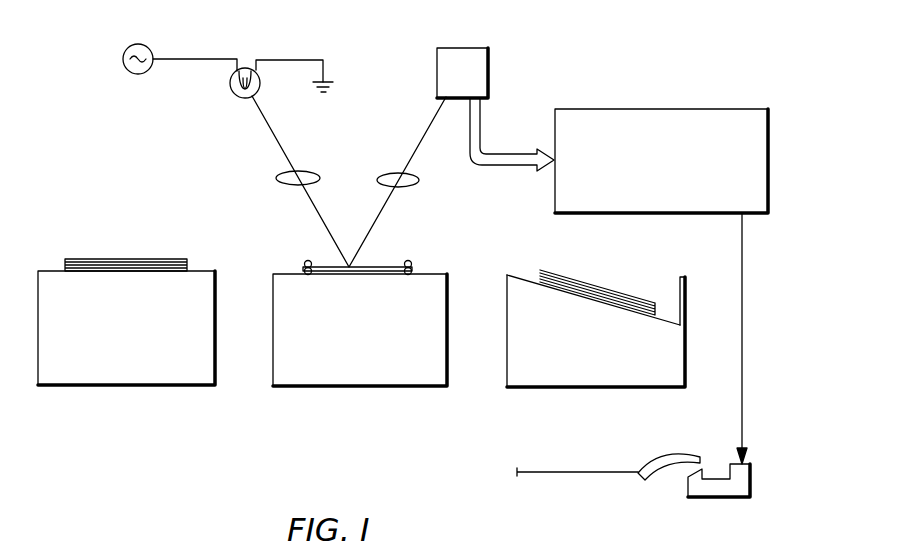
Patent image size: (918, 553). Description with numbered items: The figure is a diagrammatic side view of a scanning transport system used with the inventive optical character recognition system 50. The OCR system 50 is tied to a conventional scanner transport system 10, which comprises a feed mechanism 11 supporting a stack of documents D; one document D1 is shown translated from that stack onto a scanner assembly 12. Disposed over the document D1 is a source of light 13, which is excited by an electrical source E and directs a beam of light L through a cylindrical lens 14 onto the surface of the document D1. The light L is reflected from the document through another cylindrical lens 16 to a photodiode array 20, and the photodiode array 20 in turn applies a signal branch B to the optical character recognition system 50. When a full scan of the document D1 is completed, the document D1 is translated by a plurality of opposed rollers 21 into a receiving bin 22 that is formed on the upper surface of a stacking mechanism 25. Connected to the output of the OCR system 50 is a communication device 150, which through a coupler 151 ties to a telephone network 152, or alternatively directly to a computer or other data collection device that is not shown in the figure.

The electrical source E is at (146, 48).
The source of light 13 is at (236, 96).
The beam of light L is at (276, 135).
The cylindrical lens 14 is at (285, 182).
The cylindrical lens 16 is at (412, 184).
The photodiode array 20 is at (470, 48).
The signal branch B is at (504, 154).
The optical character recognition system 50 is at (780, 146).
The feed mechanism 11 is at (124, 385).
The stack of documents D is at (118, 265).
The scanner assembly 12 is at (352, 377).
The document D1 is at (378, 266).
The opposed rollers 21 is at (304, 267).
The scanner transport system 10 is at (236, 428).
The stacking mechanism 25 is at (595, 387).
The receiving bin 22 is at (513, 274).
The telephone network 152 is at (595, 473).
The communication device 150 is at (694, 447).
The coupler 151 is at (752, 490).